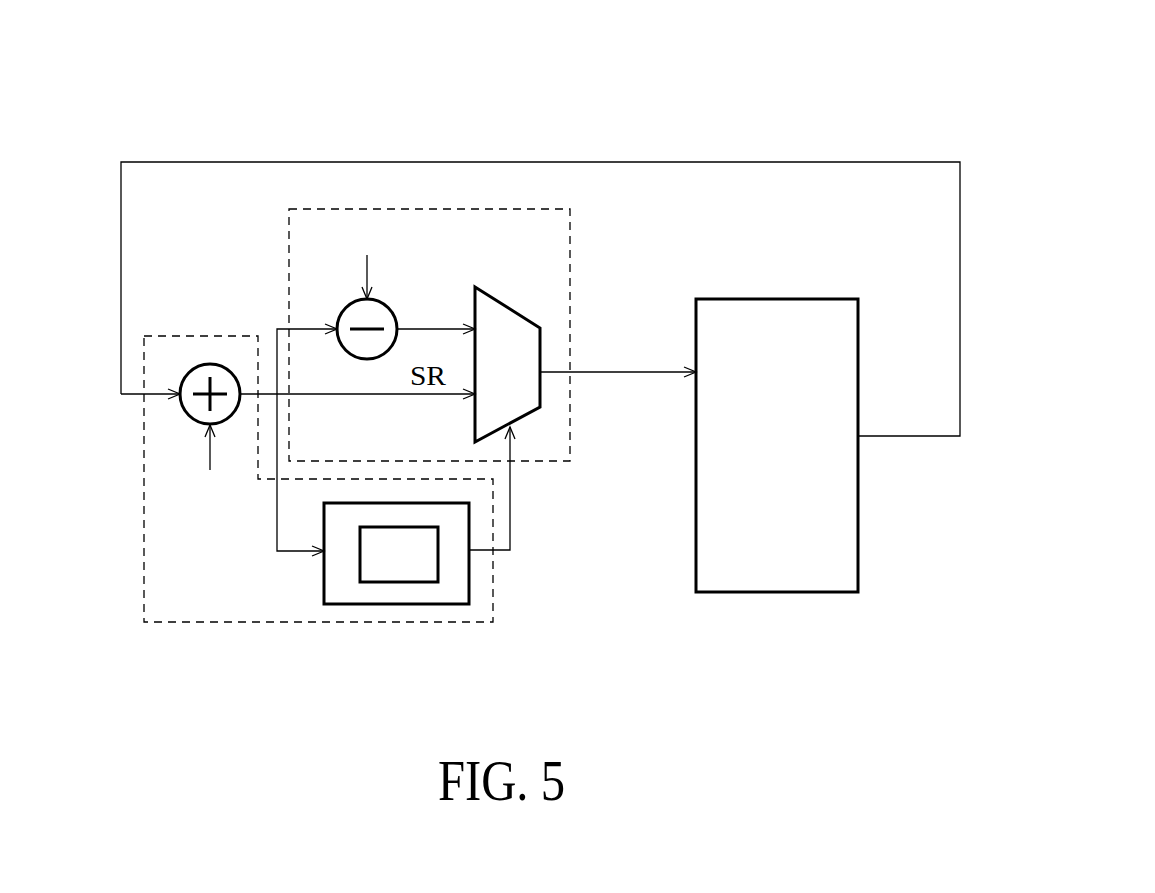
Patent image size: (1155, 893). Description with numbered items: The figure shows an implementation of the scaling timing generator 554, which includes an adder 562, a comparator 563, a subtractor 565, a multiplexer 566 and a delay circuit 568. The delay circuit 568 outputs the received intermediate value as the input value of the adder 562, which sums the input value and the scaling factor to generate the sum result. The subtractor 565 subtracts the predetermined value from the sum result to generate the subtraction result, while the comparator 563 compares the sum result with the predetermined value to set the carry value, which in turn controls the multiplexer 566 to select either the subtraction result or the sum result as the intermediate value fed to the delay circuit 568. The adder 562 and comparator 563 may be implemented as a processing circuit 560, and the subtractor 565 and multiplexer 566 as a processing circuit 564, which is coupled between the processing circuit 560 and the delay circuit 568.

The scaling timing generator 554 is at (1033, 98).
The processing circuit 560 is at (238, 336).
The adder 562 is at (193, 370).
The comparator 563 is at (324, 578).
The processing circuit 564 is at (570, 281).
The subtractor 565 is at (390, 305).
The multiplexer 566 is at (508, 306).
The delay circuit 568 is at (792, 299).